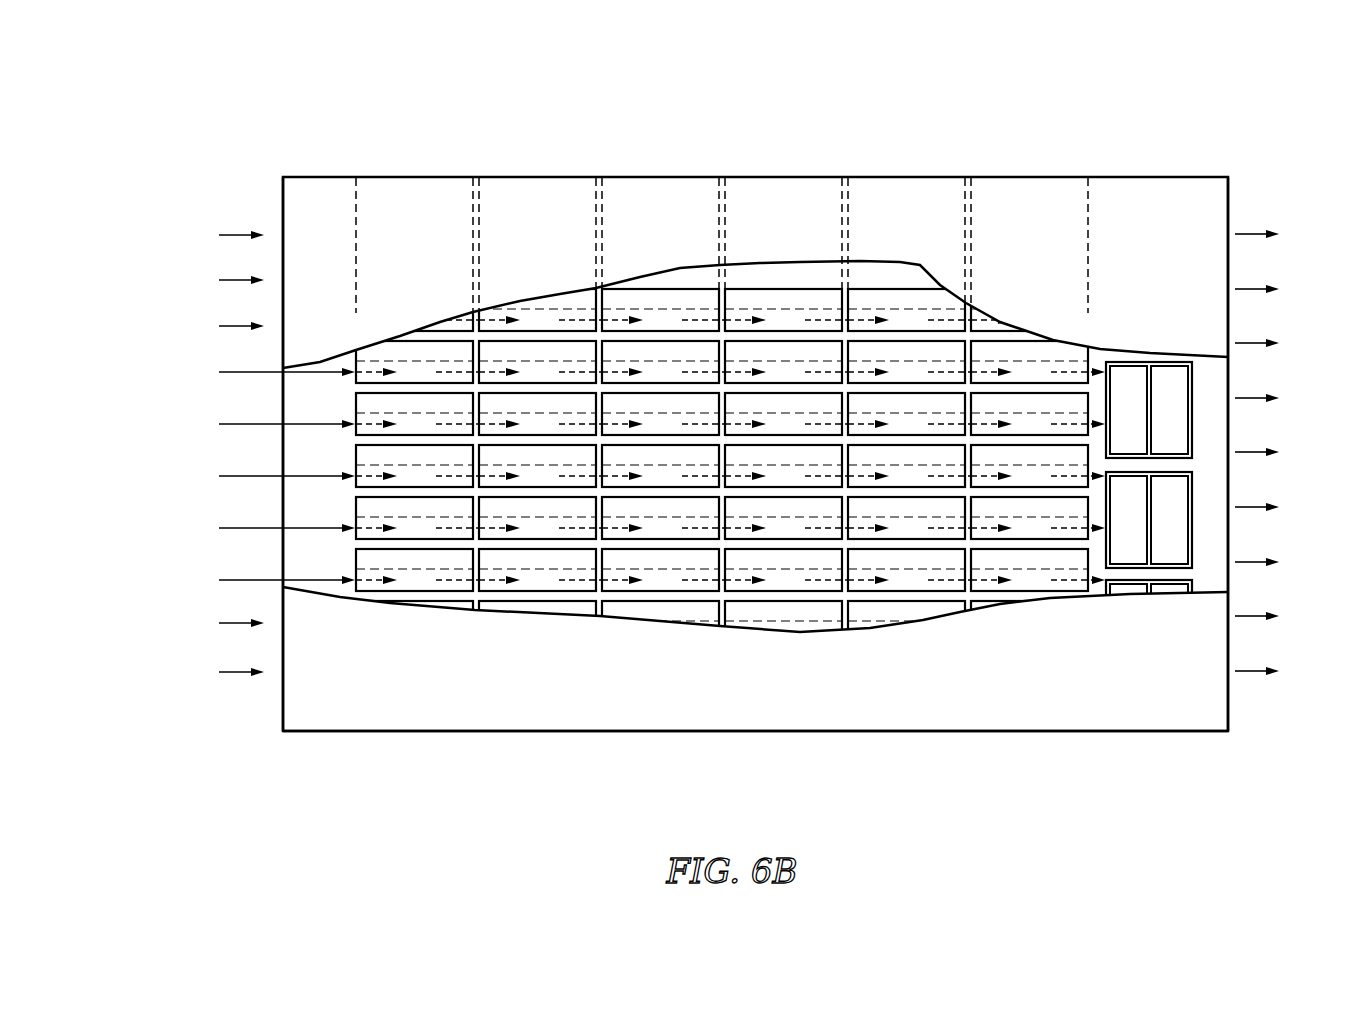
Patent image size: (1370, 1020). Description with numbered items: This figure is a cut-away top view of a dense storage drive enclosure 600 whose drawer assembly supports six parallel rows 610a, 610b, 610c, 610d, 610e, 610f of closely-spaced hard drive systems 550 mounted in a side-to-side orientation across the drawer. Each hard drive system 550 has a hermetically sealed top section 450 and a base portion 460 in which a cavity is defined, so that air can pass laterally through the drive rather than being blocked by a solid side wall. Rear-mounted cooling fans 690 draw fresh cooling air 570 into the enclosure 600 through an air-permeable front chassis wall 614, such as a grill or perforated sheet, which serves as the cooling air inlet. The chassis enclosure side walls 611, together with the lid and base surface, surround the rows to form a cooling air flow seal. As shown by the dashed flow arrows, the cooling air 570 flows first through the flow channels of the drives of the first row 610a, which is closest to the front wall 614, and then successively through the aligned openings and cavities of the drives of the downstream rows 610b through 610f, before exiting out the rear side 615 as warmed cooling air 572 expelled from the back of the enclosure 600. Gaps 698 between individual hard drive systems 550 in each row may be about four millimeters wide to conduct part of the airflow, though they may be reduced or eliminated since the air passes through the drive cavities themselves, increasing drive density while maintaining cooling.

The enclosure 600 is at (1272, 103).
The air-permeable front chassis wall 614 is at (282, 197).
The rear side 615 is at (1228, 231).
The chassis enclosure side walls 611 is at (425, 732).
The fresh cooling air 570 is at (205, 230).
The warmed cooling air 572 is at (1295, 231).
The first row of hard drive systems 610a is at (356, 162).
The second row of hard drive systems 610b is at (479, 162).
The third row of hard drive systems 610c is at (602, 162).
The fourth row of hard drive systems 610d is at (725, 162).
The fifth row of hard drive systems 610e is at (848, 162).
The last row of hard drive systems 610f is at (971, 162).
The hermetically sealed top section 450 is at (567, 348).
The base portion 460 is at (787, 372).
The hard drive systems 550 is at (670, 587).
The gaps 698 is at (923, 492).
The rear-mounted cooling fans 690 is at (1162, 382).